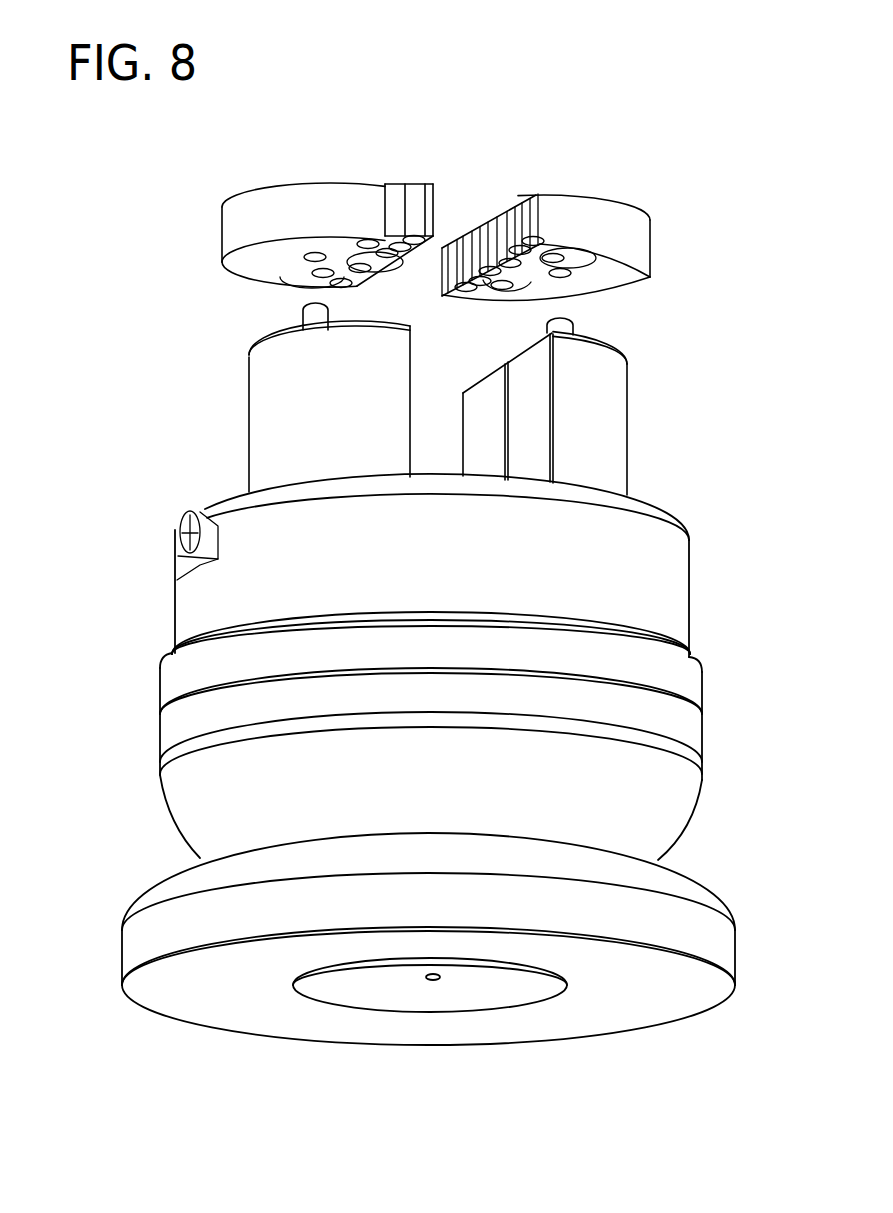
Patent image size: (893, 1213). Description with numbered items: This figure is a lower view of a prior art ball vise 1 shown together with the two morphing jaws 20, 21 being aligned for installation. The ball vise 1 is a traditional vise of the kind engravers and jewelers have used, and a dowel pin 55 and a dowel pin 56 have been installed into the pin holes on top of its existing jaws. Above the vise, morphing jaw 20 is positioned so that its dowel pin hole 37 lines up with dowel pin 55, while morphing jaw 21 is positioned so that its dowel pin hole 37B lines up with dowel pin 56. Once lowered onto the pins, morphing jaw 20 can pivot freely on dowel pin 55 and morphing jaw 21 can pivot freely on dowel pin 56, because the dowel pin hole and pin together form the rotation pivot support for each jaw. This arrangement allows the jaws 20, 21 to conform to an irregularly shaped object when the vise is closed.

The prior art ball vise 1 is at (85, 335).
The morphing jaw 20 is at (305, 153).
The morphing jaw 21 is at (533, 152).
The dowel-pin hole 37 is at (241, 277).
The dowel-pin hole 37B is at (588, 268).
The dowel pin 55 is at (308, 314).
The dowel pin 56 is at (567, 325).